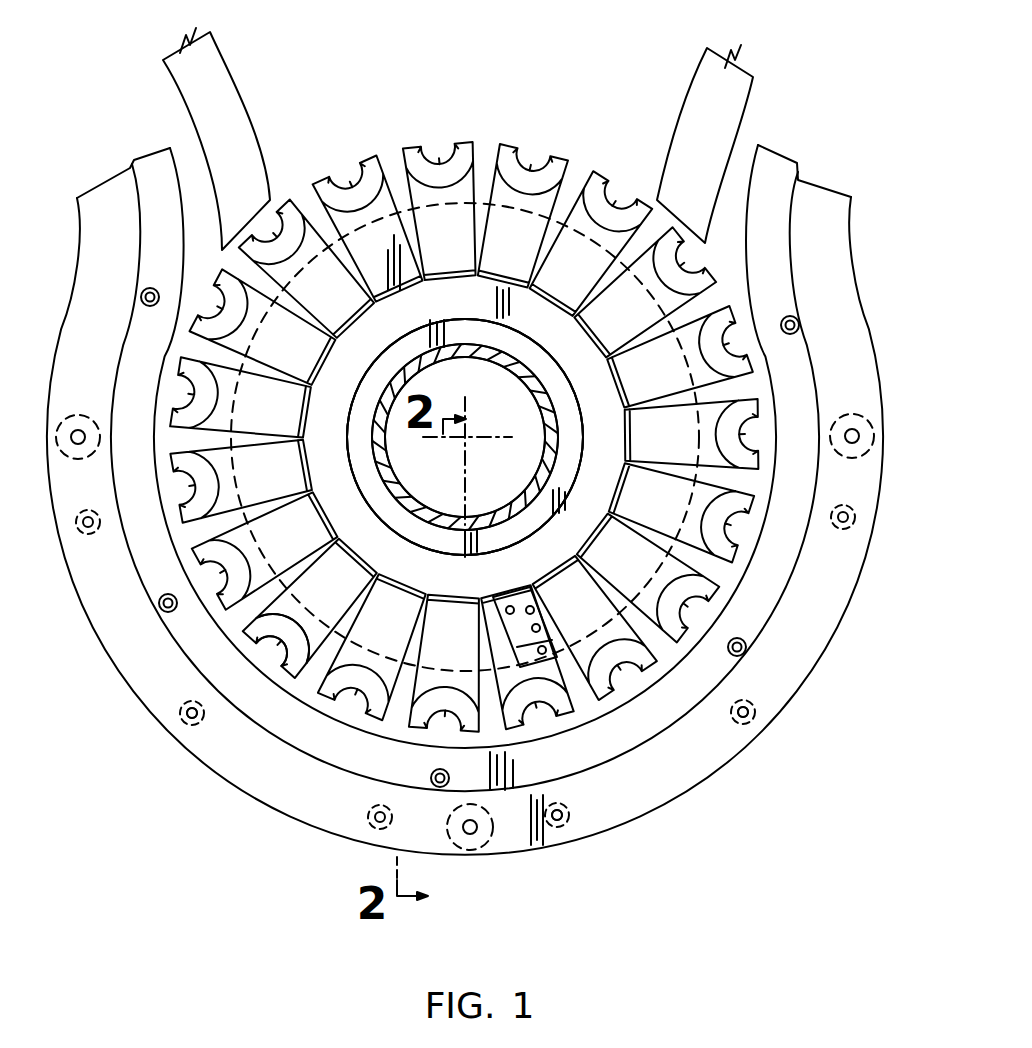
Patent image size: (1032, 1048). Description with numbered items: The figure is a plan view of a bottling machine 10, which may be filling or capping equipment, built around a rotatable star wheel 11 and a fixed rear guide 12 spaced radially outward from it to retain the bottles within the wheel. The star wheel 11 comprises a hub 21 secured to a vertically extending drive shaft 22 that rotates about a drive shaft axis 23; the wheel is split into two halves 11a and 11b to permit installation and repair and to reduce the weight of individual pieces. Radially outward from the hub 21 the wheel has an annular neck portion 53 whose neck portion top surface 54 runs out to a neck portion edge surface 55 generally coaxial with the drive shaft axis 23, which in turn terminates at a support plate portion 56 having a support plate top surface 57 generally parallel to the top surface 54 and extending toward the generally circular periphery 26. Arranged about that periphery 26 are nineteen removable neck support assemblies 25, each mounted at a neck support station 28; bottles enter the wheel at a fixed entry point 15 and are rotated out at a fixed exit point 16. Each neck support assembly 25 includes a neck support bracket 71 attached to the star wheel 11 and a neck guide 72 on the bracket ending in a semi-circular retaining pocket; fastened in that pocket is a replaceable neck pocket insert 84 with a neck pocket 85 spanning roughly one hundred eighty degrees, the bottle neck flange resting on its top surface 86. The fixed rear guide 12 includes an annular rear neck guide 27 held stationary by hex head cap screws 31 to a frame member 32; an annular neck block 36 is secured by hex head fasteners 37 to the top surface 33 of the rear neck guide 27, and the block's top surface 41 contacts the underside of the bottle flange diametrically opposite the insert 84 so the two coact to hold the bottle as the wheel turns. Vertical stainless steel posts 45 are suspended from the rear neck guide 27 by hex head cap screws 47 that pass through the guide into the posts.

The bottling machine 10 is at (797, 100).
The rotatable star wheel 11 is at (488, 285).
The star wheel half 11a is at (372, 328).
The star wheel half 11b is at (413, 583).
The fixed rear guide 12 is at (113, 180).
The fixed entry point 15 is at (207, 258).
The fixed exit point 16 is at (723, 262).
The hub 21 is at (380, 400).
The drive shaft 22 is at (453, 380).
The drive shaft axis 23 is at (465, 437).
The neck support assembly 25 is at (737, 577).
The periphery 26 is at (598, 455).
The annular rear neck guide 27 is at (832, 267).
The neck support station 28 is at (572, 215).
The hex head cap screw 31 is at (78, 440).
The frame member 32 is at (78, 415).
The top surface 33 is at (280, 793).
The annular neck block 36 is at (663, 737).
The hex head fastener 37 is at (807, 317).
The top surface 41 is at (620, 743).
The vertical stainless steel post 45 is at (753, 711).
The hex head cap screw 47 is at (752, 720).
The annular neck portion 53 is at (578, 432).
The neck portion top surface 54 is at (575, 463).
The neck portion edge surface 55 is at (362, 503).
The support plate portion 56 is at (565, 478).
The support plate top surface 57 is at (577, 513).
The neck support bracket 71 is at (517, 585).
The neck guide 72 is at (313, 520).
The replaceable neck pocket insert 84 is at (247, 637).
The neck pocket 85 is at (273, 643).
The top surface 86 is at (288, 668).